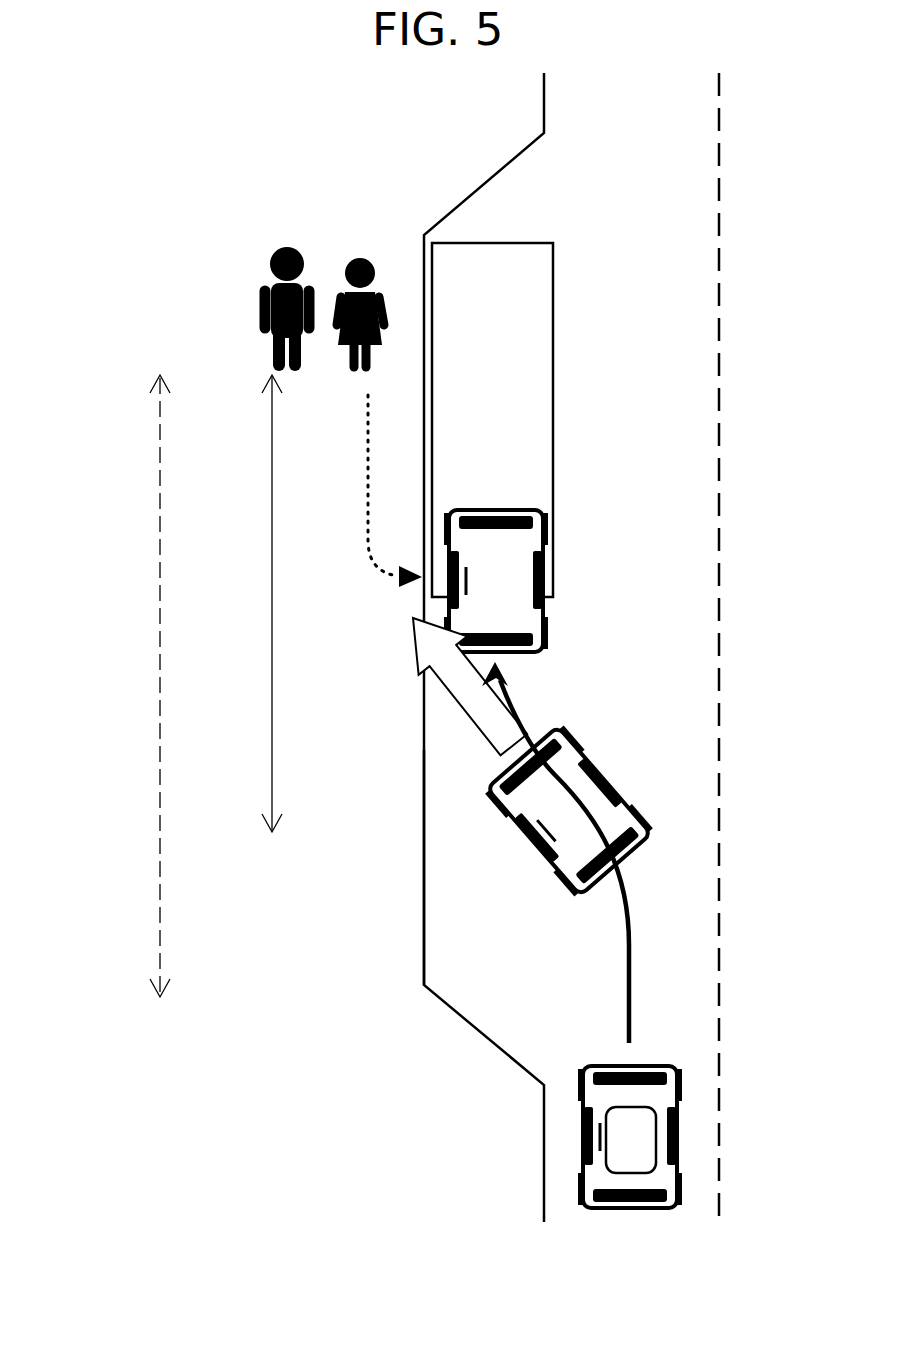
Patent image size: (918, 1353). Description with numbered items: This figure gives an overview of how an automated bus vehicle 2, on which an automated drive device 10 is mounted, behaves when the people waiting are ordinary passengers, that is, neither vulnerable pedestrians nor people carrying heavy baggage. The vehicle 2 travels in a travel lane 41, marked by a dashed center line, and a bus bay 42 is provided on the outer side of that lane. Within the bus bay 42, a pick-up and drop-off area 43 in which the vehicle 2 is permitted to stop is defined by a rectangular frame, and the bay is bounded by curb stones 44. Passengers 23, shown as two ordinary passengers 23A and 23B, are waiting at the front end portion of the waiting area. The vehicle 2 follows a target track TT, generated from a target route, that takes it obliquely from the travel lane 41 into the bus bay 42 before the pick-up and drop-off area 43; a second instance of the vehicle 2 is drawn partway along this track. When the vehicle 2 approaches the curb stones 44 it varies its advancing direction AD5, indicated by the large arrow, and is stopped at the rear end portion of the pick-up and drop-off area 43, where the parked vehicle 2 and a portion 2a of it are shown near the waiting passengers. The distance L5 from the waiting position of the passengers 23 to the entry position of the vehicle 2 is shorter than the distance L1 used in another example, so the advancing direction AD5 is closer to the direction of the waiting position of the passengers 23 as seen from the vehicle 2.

The vehicle 2 is at (540, 583).
The vehicle door 2a is at (425, 597).
The automated drive device 10 is at (610, 1108).
The passengers 23 is at (308, 244).
The ordinary passenger 23A is at (352, 274).
The ordinary passenger 23B is at (290, 247).
The travel lane 41 is at (668, 678).
The bus bay 42 is at (455, 863).
The pick-up and drop-off area 43 is at (555, 415).
The curb stones 44 is at (424, 757).
The advancing direction AD5 is at (412, 648).
The target track TT is at (623, 960).
The distance L1 is at (139, 686).
The distance L5 is at (255, 603).